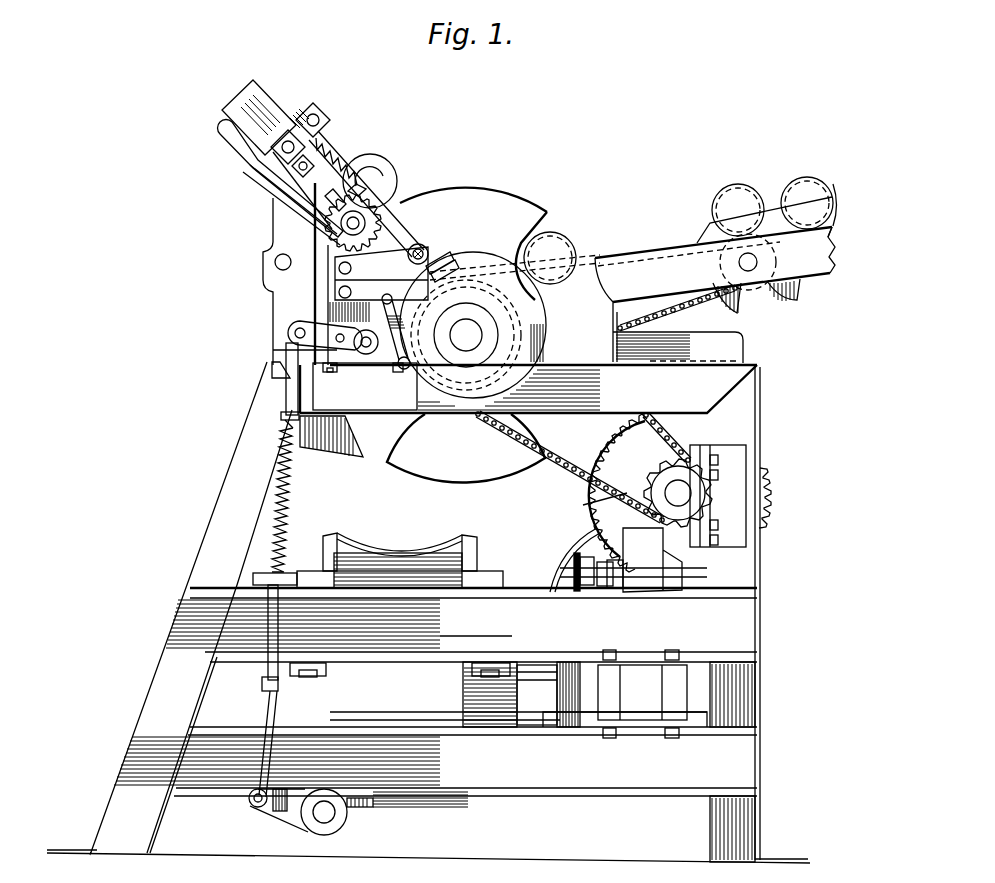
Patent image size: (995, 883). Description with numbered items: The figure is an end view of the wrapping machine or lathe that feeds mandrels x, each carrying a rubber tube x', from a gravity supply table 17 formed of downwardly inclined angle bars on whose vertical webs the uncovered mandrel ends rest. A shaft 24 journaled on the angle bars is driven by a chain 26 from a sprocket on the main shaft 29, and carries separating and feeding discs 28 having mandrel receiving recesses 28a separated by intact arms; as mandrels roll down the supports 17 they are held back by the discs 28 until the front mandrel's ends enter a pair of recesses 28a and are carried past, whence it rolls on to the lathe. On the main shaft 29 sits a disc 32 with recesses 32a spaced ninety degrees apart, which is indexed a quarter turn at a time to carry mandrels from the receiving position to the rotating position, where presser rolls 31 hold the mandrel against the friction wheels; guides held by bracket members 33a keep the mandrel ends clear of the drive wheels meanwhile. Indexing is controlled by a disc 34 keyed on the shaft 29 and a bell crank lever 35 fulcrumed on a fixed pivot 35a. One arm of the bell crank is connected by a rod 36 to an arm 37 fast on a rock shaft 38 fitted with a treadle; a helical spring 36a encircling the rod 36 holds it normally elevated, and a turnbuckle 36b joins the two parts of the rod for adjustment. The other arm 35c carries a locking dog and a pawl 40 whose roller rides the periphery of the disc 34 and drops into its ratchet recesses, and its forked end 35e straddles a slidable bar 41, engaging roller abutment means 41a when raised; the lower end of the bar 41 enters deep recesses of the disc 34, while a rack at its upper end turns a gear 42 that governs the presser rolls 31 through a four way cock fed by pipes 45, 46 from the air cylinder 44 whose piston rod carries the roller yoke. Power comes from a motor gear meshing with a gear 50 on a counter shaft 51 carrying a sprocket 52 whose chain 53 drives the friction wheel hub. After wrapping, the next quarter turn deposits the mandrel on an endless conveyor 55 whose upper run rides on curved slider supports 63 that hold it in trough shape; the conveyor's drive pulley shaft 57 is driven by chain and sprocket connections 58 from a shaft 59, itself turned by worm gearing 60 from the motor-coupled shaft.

The gravity supply table 17 is at (828, 270).
The shaft 24 is at (750, 272).
The chain 26 is at (644, 320).
The separating and feeding discs 28 is at (704, 235).
The mandrel receiving recesses 28a is at (772, 306).
The main shaft 29 is at (470, 330).
The presser rolls 31 is at (385, 170).
The disc 32 is at (452, 488).
The mandrel receiving recesses 32a is at (548, 212).
The bracket members 33a is at (664, 326).
The disc 34 is at (473, 325).
The bell crank lever 35 is at (360, 357).
The fixed pivot 35a is at (379, 370).
The arm of bell crank 35c is at (505, 322).
The fork 35e is at (446, 256).
The rod 36 is at (284, 368).
The helical spring 36a is at (292, 516).
The turnbuckle 36b is at (296, 331).
The arm 37 is at (286, 812).
The rock shaft 38 is at (330, 815).
The pawl 40 is at (404, 332).
The slidable rod or bar 41 is at (402, 238).
The roller abutment means 41a is at (322, 150).
The gear 42 is at (364, 234).
The cylinder 44 is at (266, 104).
The pipe 45 is at (243, 150).
The pipe 46 is at (350, 176).
The gear 50 is at (603, 446).
The counter shaft 51 is at (672, 490).
The sprocket 52 is at (593, 506).
The chain 53 is at (562, 468).
The endless conveyor 55 is at (360, 548).
The shaft 57 is at (540, 678).
The chain and sprocket connections 58 is at (580, 586).
The shaft 59 is at (590, 542).
The worm gearing 60 is at (684, 518).
The slider supports 63 is at (476, 552).
The mandrels x is at (790, 189).
The rubber tube x' is at (723, 209).